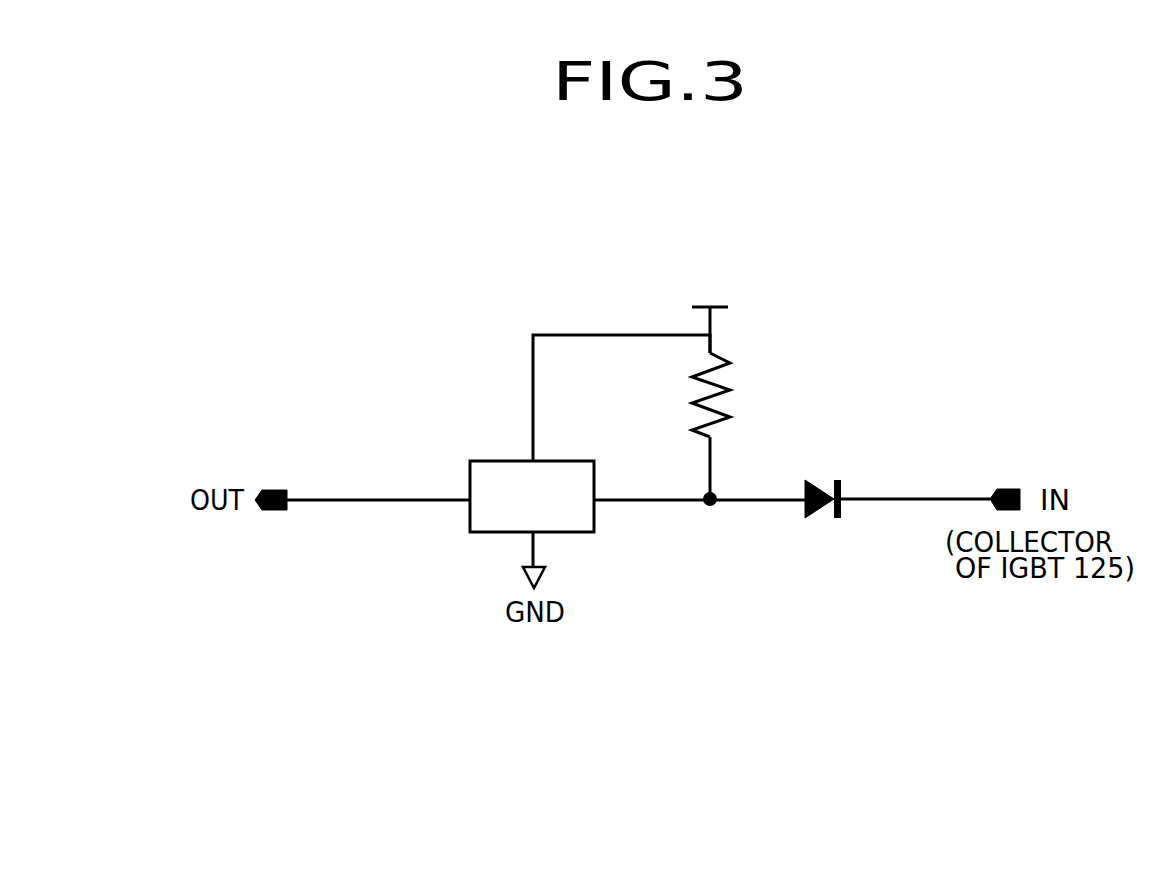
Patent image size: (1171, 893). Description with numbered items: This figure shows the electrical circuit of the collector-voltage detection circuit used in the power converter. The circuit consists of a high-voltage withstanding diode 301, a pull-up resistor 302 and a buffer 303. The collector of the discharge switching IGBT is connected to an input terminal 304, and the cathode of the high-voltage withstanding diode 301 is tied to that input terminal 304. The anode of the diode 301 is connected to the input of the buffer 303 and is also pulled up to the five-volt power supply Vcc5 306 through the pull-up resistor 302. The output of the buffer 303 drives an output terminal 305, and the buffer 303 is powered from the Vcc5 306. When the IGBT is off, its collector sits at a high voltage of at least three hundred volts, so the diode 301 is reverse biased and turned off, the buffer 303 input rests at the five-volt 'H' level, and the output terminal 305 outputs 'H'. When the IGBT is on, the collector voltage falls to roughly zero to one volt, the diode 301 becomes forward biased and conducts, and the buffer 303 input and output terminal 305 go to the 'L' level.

The high-voltage withstanding diode 301 is at (812, 483).
The pull-up resistor 302 is at (683, 393).
The buffer 303 is at (480, 460).
The input terminal 304 is at (1008, 488).
The output terminal 305 is at (272, 482).
The 5V power supply (Vcc5) 306 is at (707, 260).